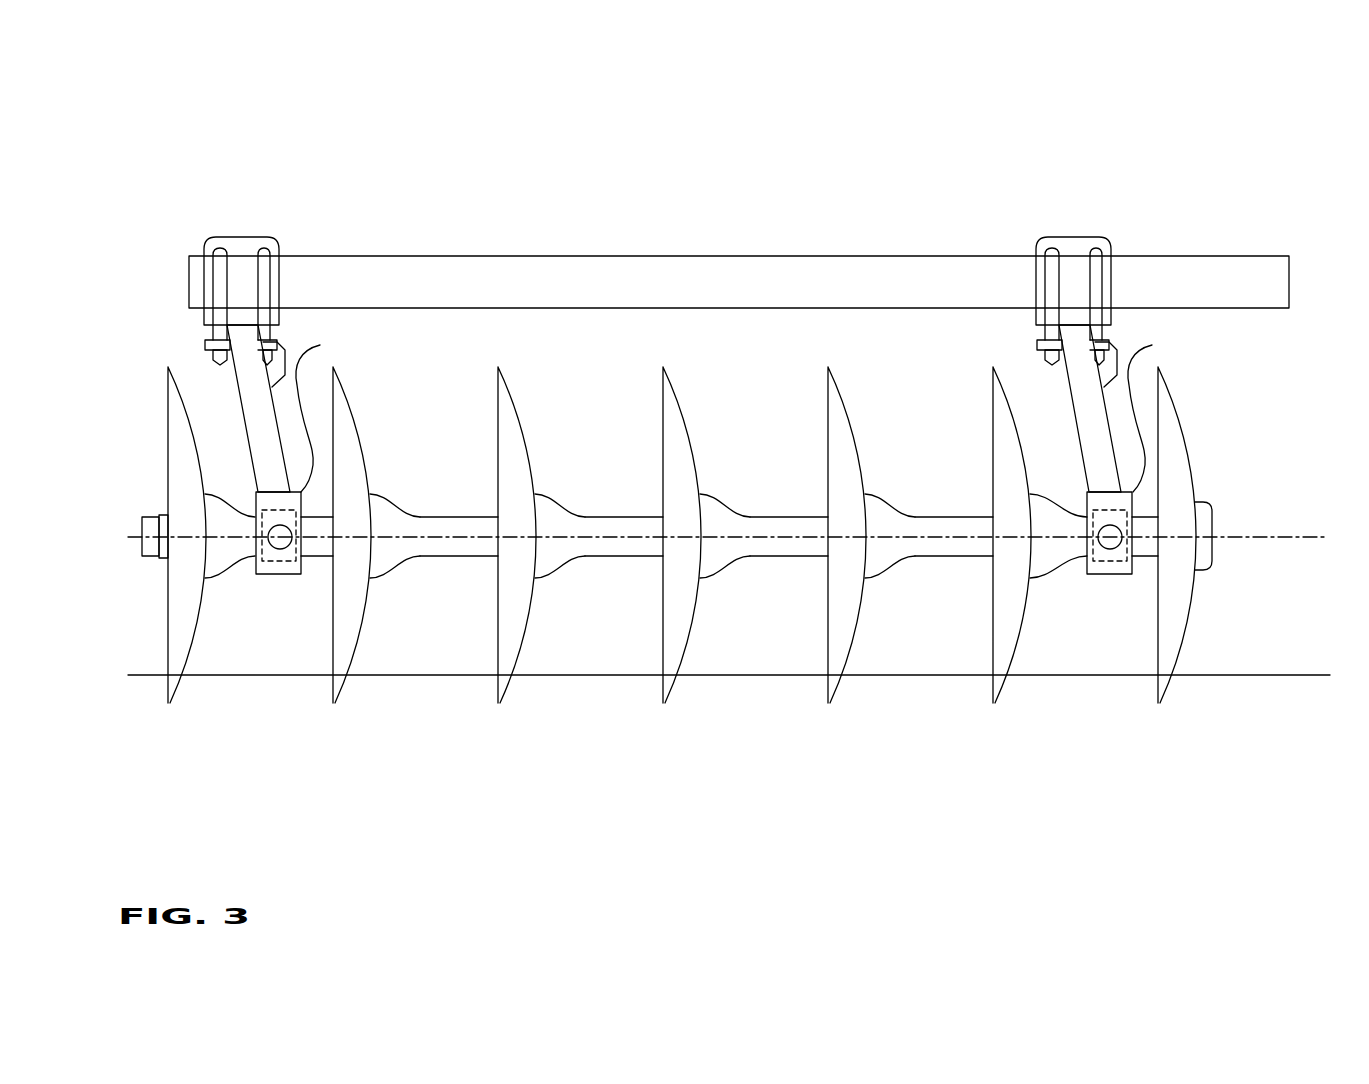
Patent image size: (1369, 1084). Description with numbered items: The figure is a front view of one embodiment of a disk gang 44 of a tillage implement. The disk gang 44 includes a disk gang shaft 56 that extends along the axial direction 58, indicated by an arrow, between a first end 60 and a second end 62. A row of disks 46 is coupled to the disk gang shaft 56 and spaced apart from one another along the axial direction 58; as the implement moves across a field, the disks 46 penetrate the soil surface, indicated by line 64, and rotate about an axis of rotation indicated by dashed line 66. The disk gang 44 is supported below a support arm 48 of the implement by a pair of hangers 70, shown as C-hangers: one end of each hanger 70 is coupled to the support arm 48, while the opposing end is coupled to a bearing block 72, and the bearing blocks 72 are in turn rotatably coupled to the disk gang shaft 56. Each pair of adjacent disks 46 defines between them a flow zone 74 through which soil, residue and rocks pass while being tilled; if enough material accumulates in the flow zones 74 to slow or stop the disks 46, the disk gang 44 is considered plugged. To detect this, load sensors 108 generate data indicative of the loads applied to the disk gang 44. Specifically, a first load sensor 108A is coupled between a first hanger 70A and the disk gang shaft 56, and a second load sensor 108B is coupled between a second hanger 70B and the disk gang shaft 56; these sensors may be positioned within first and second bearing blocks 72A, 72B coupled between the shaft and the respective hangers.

The disk gang 44 is at (245, 122).
The disks 46 is at (168, 703).
The support arm 48 is at (344, 256).
The disk gang shaft 56 is at (443, 555).
The axial direction 58 is at (613, 121).
The first end 60 is at (110, 530).
The second end 62 is at (1240, 522).
The soil surface 64 is at (1232, 675).
The axis of rotation 66 is at (1163, 215).
The hangers 70 is at (606, 364).
The first hanger 70A is at (240, 406).
The second hanger 70B is at (1075, 408).
The bearing blocks 72 is at (755, 409).
The first bearing block 72A is at (339, 409).
The second bearing block 72B is at (1171, 409).
The flow zones 74 is at (273, 657).
The load sensors 108 is at (669, 627).
The first load sensor 108A is at (275, 563).
The second load sensor 108B is at (1106, 563).